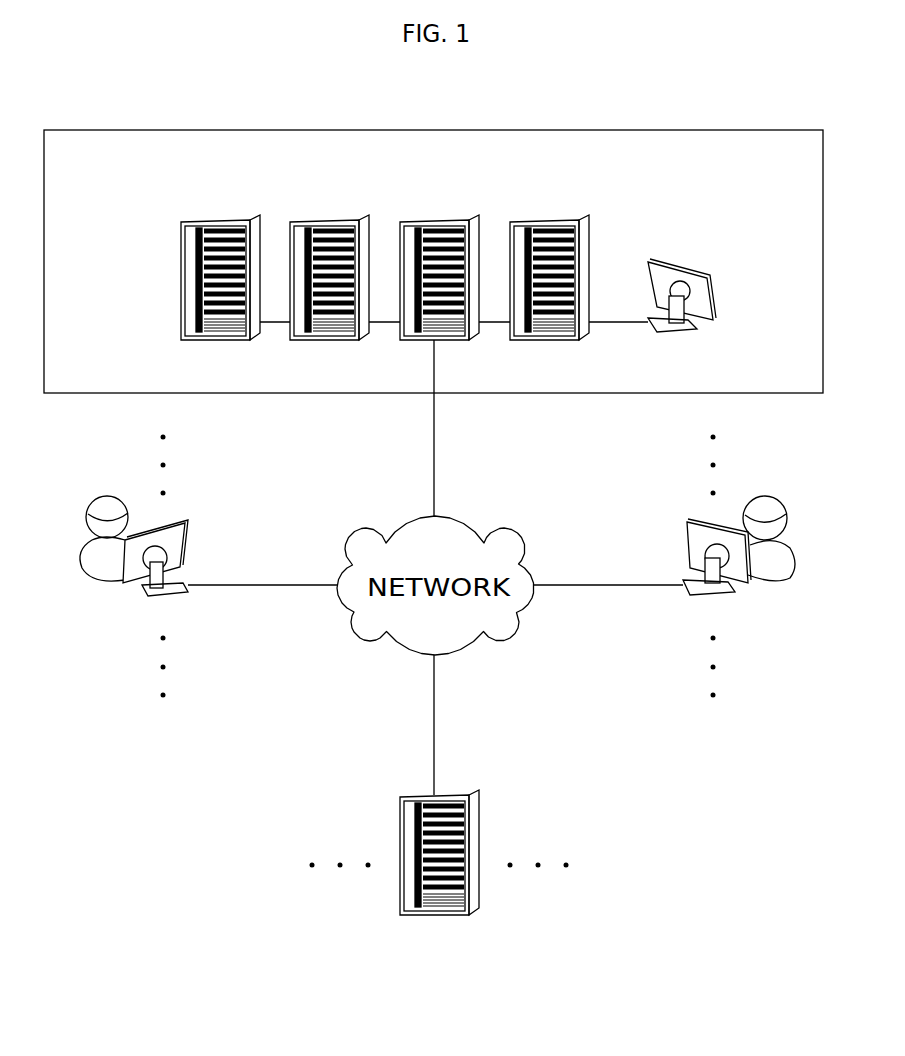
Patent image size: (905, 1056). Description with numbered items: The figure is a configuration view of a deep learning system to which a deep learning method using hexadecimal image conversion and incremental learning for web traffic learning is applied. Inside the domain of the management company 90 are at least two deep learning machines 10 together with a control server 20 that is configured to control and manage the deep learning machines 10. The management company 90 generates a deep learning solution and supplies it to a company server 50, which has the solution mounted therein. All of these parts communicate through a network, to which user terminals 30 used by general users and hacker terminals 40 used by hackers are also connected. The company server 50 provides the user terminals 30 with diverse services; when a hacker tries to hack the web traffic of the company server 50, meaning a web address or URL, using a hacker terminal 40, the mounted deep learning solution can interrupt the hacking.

The management company 90 is at (765, 130).
The deep learning machine 10 is at (233, 222).
The control server 20 is at (665, 262).
The user terminal 30 is at (190, 540).
The hacker terminal 40 is at (687, 535).
The company server 50 is at (470, 798).